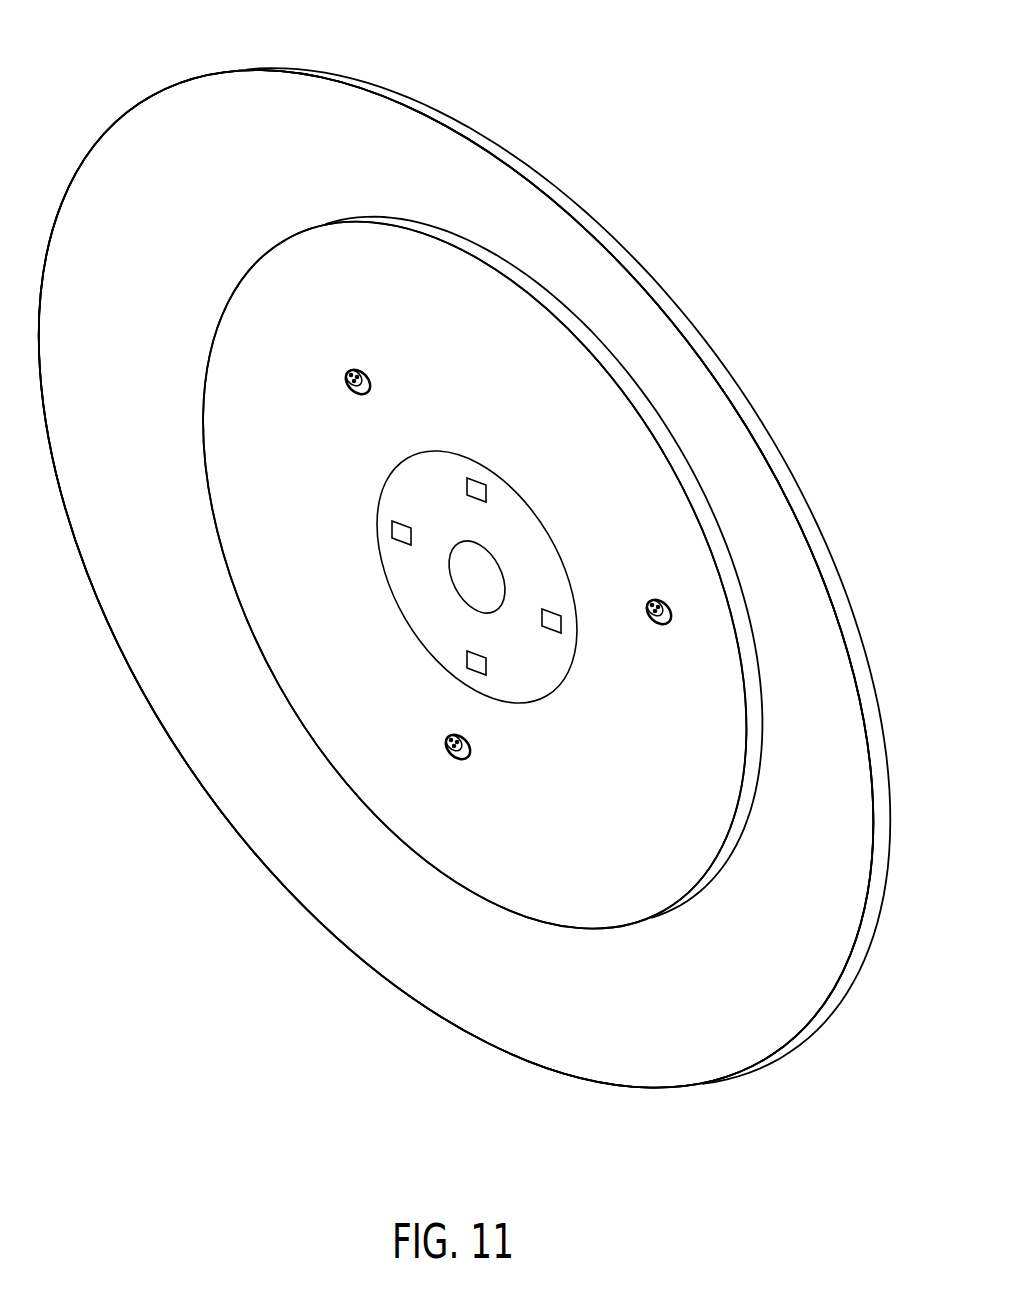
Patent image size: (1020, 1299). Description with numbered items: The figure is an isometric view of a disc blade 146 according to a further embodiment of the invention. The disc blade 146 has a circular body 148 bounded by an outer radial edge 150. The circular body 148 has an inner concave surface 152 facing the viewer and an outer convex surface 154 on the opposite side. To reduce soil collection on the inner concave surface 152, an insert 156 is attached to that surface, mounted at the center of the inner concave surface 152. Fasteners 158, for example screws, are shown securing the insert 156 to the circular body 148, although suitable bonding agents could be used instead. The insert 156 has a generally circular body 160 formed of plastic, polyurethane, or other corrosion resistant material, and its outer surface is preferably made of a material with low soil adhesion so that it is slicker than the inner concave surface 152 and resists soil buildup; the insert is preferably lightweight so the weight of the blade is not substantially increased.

The disc blade 146 is at (162, 78).
The circular body 148 is at (628, 328).
The outer radial edge 150 is at (591, 1083).
The inner concave surface 152 is at (287, 865).
The outer convex surface 154 is at (547, 242).
The insert 156 is at (598, 938).
The fasteners 158 is at (350, 370).
The generally circular body 160 is at (722, 843).